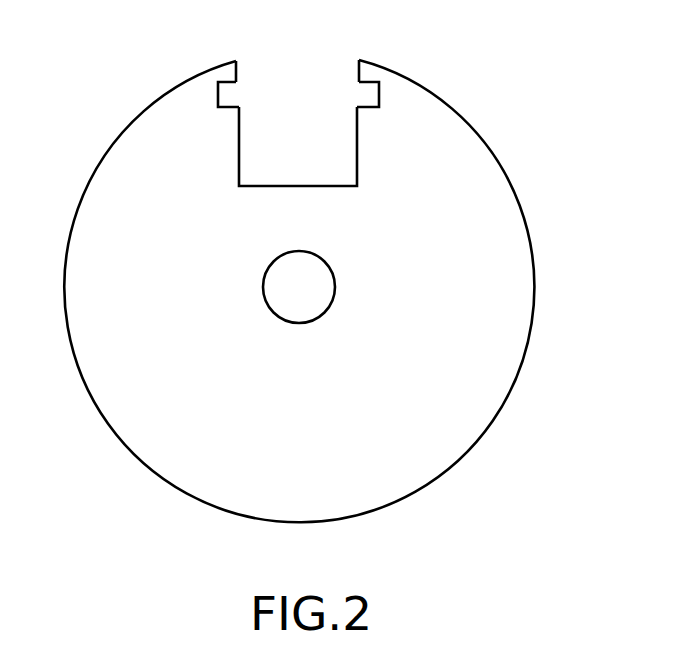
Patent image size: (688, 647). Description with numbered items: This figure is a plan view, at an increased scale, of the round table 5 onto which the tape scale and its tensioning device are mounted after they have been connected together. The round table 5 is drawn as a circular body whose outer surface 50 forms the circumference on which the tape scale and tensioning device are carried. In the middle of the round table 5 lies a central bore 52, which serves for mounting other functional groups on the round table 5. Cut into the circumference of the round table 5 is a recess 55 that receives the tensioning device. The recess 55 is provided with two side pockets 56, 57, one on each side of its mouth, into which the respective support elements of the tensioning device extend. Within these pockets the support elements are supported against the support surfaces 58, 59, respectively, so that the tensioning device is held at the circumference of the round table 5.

The round table 5 is at (343, 261).
The outer surface 50 is at (523, 222).
The central bore 52 is at (335, 298).
The recess 55 is at (325, 158).
The side pocket 56 is at (228, 92).
The side pocket 57 is at (363, 92).
The support surface 58 is at (228, 92).
The support surface 59 is at (367, 97).